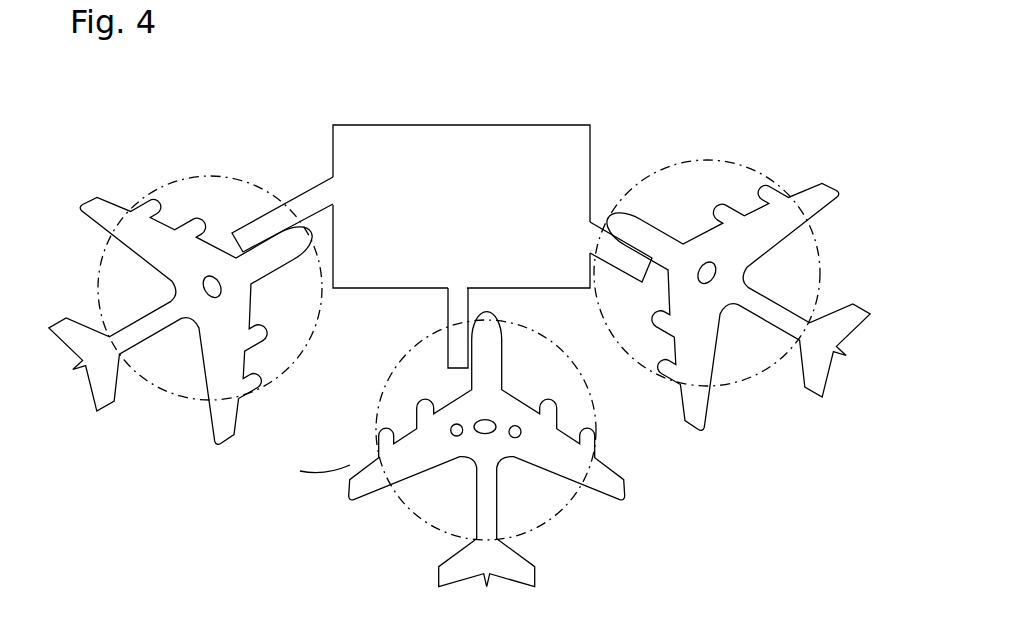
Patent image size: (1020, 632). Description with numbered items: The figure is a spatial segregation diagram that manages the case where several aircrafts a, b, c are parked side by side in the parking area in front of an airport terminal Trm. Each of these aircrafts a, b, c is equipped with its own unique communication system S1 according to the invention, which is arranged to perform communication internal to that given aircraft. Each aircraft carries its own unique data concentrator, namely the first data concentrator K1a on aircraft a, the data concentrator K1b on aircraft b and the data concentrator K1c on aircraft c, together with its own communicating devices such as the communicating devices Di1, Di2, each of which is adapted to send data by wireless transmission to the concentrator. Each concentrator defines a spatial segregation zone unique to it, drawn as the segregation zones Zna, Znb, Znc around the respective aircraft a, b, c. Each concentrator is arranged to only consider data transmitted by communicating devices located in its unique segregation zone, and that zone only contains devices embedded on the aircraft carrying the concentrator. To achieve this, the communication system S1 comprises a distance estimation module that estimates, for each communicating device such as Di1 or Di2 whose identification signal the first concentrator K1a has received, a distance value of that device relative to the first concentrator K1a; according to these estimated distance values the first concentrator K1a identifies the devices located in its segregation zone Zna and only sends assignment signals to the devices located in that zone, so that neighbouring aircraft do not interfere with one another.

The airport terminal Trm is at (413, 163).
The first data concentrator K1a is at (487, 433).
The data concentrator K1b is at (697, 267).
The data concentrator K1c is at (208, 277).
The segregation zone Zna is at (573, 500).
The segregation zone Znb is at (743, 352).
The segregation zone Znc is at (150, 385).
The communicating device Di1 is at (521, 433).
The communicating device Di2 is at (457, 436).
The communication system S1 is at (300, 483).
The aircraft a is at (375, 477).
The aircraft b is at (815, 352).
The aircraft c is at (227, 422).